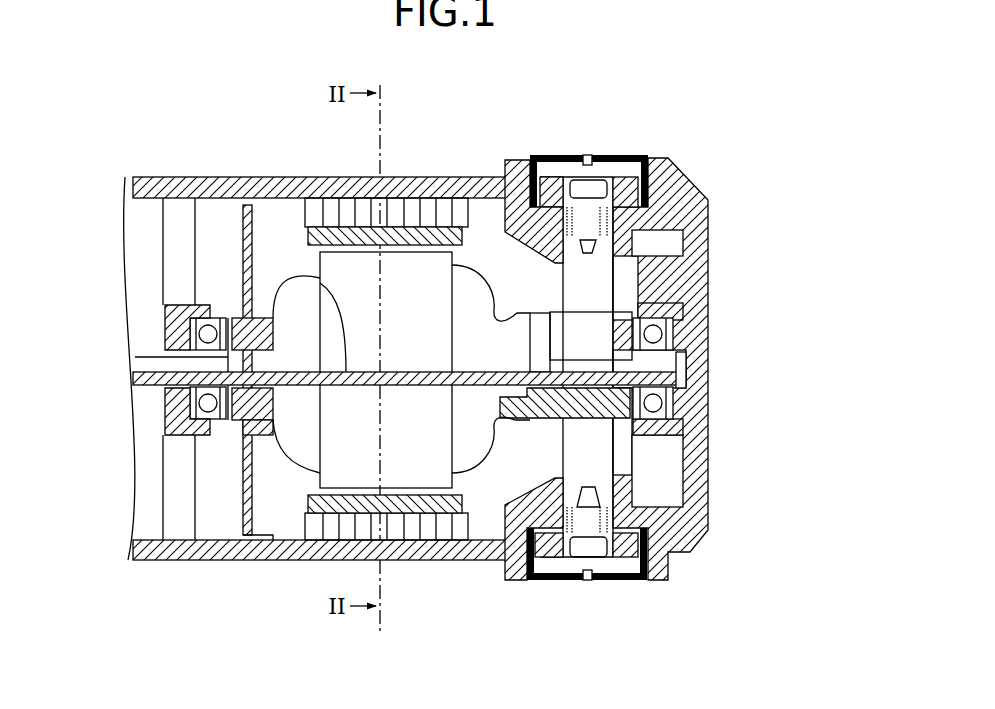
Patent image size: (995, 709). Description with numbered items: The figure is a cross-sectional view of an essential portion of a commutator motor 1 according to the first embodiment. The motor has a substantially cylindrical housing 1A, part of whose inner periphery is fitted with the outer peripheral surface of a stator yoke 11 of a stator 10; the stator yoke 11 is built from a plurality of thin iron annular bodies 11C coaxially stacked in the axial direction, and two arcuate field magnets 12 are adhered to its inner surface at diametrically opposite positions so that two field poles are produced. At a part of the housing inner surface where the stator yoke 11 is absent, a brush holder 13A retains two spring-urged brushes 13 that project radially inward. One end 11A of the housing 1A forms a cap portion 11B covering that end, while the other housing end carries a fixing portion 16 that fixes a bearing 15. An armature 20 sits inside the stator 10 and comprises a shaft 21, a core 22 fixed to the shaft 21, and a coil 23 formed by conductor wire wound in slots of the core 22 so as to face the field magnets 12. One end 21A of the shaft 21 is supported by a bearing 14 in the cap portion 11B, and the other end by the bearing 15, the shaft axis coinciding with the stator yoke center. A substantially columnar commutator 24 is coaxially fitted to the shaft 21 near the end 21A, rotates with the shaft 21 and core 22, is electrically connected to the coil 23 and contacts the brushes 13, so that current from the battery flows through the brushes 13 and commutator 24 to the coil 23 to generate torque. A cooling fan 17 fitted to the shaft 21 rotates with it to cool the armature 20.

The commutator motor 1 is at (790, 163).
The housing 1A is at (478, 217).
The stator 10 is at (523, 160).
The stator yoke 11 is at (396, 180).
The one end of the housing 11A is at (698, 182).
The cap portion 11B is at (710, 223).
The annular bodies 11C is at (363, 205).
The field magnet 12 is at (437, 215).
The brush 13 is at (587, 265).
The brush holder 13A is at (617, 293).
The bearing 14 is at (668, 332).
The bearing 15 is at (168, 333).
The fixing portion 16 is at (183, 303).
The cooling fan 17 is at (240, 507).
The armature 20 is at (500, 470).
The shaft 21 is at (345, 360).
The one end of the shaft 21A is at (686, 364).
The core 22 is at (412, 482).
The coil 23 is at (292, 278).
The commutator 24 is at (618, 307).